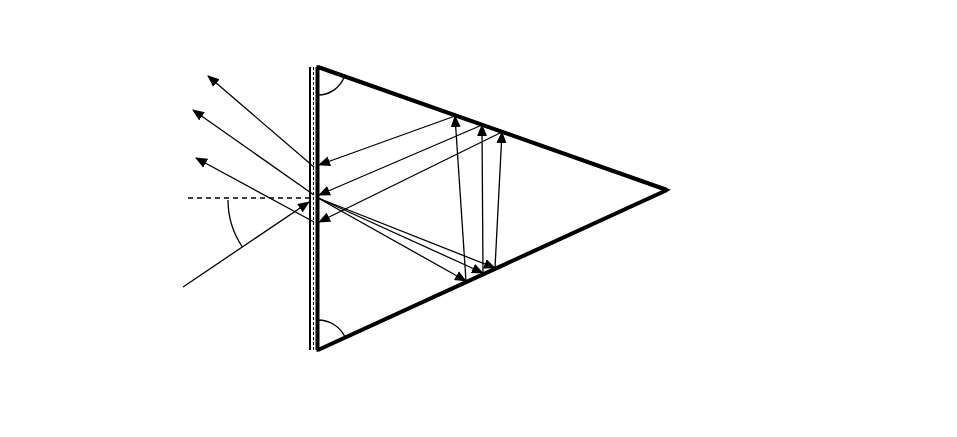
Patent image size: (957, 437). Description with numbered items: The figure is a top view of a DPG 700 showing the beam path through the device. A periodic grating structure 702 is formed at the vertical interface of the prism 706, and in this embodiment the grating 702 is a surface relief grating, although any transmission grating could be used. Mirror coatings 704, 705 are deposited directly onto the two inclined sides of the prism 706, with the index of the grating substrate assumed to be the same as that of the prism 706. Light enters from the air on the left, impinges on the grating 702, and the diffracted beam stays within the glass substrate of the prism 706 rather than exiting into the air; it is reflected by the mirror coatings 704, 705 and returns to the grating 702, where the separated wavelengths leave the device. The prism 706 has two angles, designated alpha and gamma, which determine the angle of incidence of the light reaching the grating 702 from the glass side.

The DPG 700 is at (113, 32).
The periodic grating structure 702 is at (307, 87).
The mirror coating 704 is at (518, 133).
The mirror coating 705 is at (532, 257).
The prism 706 is at (387, 290).